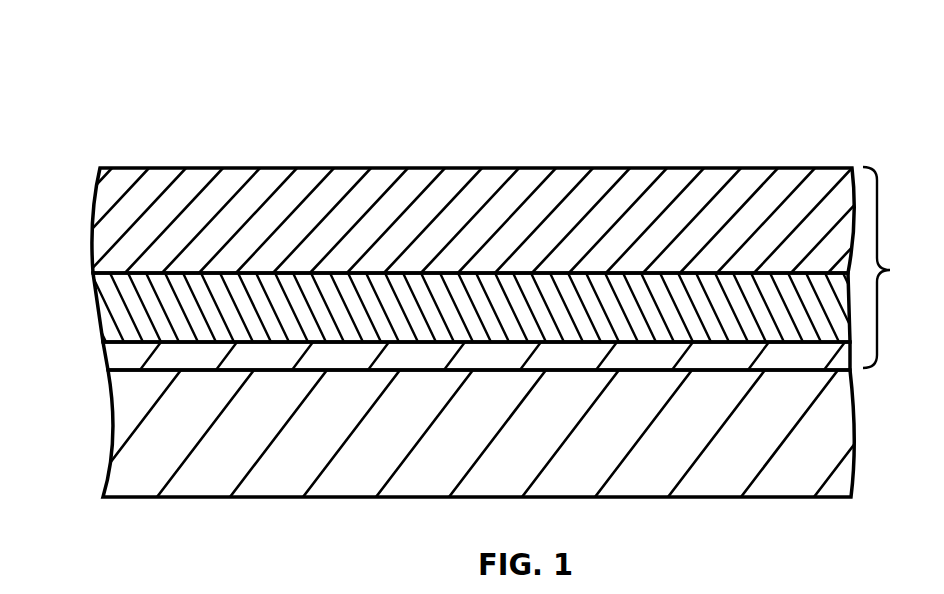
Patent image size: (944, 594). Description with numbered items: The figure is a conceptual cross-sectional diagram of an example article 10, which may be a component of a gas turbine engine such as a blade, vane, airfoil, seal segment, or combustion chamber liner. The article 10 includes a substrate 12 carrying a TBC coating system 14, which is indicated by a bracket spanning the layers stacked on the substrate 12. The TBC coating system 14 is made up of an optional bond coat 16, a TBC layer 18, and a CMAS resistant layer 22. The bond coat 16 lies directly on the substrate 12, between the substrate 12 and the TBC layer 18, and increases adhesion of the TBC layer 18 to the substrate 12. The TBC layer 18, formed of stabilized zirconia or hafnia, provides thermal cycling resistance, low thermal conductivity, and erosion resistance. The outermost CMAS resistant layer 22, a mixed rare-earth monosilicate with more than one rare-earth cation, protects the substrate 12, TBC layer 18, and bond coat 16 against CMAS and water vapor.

The article 10 is at (770, 84).
The substrate 12 is at (114, 432).
The TBC coating system 14 is at (895, 267).
The bond coat 16 is at (118, 355).
The TBC layer 18 is at (98, 304).
The CMAS resistant layer 22 is at (93, 214).